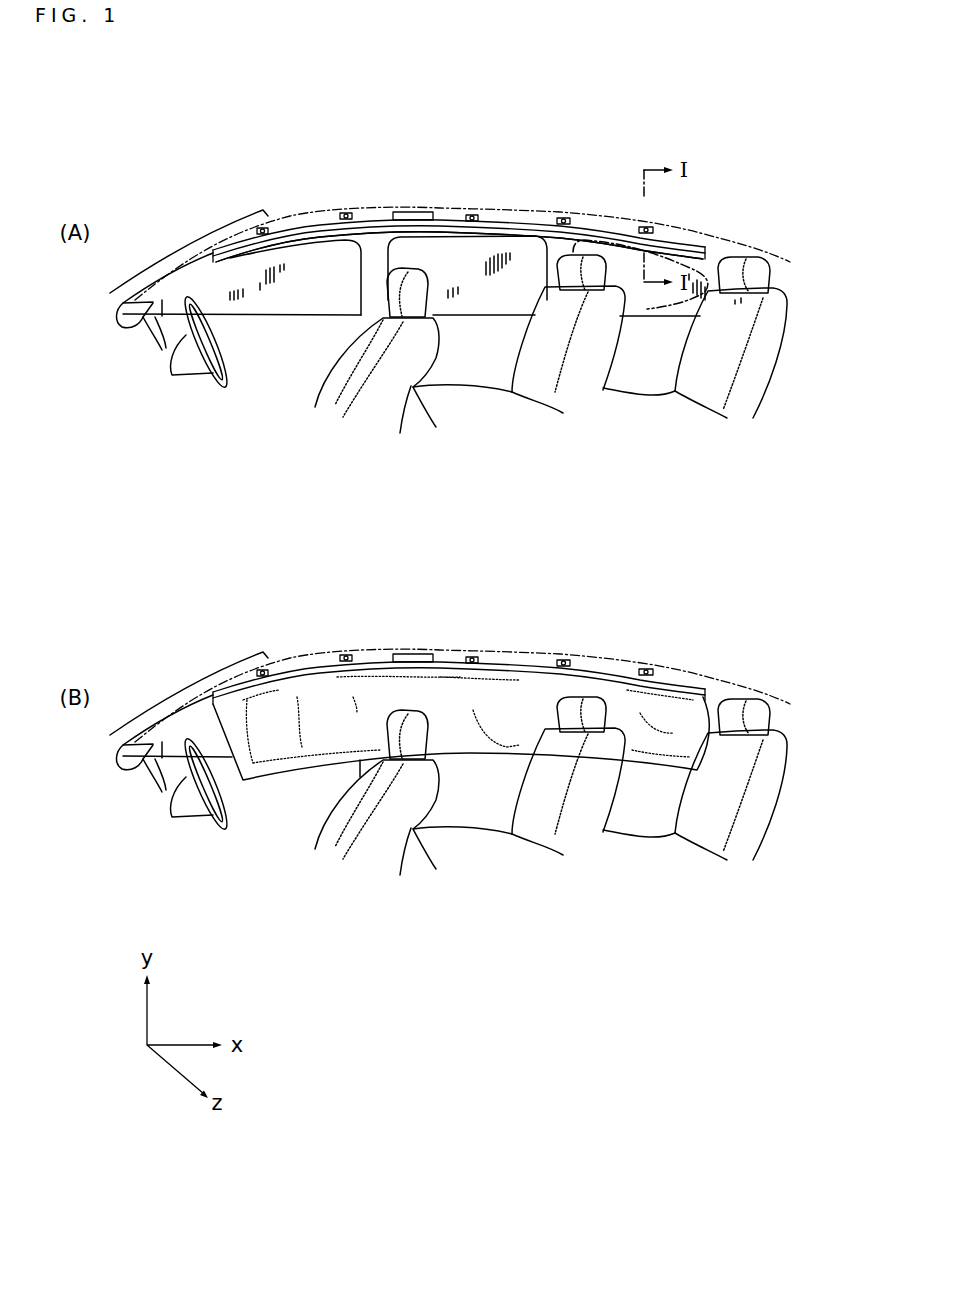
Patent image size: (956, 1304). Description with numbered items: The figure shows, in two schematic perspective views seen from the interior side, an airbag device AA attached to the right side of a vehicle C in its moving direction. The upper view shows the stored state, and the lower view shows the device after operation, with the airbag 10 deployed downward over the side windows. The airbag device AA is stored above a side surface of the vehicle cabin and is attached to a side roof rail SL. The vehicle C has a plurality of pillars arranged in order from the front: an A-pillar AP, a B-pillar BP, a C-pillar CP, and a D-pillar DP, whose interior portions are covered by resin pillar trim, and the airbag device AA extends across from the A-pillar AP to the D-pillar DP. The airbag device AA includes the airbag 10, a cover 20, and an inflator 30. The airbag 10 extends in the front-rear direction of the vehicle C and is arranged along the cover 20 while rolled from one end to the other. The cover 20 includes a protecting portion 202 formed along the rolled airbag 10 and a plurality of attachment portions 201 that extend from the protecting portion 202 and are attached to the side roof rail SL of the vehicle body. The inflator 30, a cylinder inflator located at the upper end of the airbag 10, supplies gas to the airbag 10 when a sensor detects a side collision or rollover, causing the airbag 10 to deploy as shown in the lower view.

The airbag 10 is at (485, 232).
The cover 20 is at (512, 220).
The attachment portions 201 is at (346, 213).
The protecting portion 202 is at (685, 241).
The inflator 30 is at (413, 212).
The airbag device AA is at (496, 133).
The vehicle C is at (224, 199).
The A-pillar AP is at (190, 243).
The B-pillar BP is at (368, 298).
The C-pillar CP is at (553, 263).
The D-pillar DP is at (716, 249).
The side roof rail SL is at (373, 212).